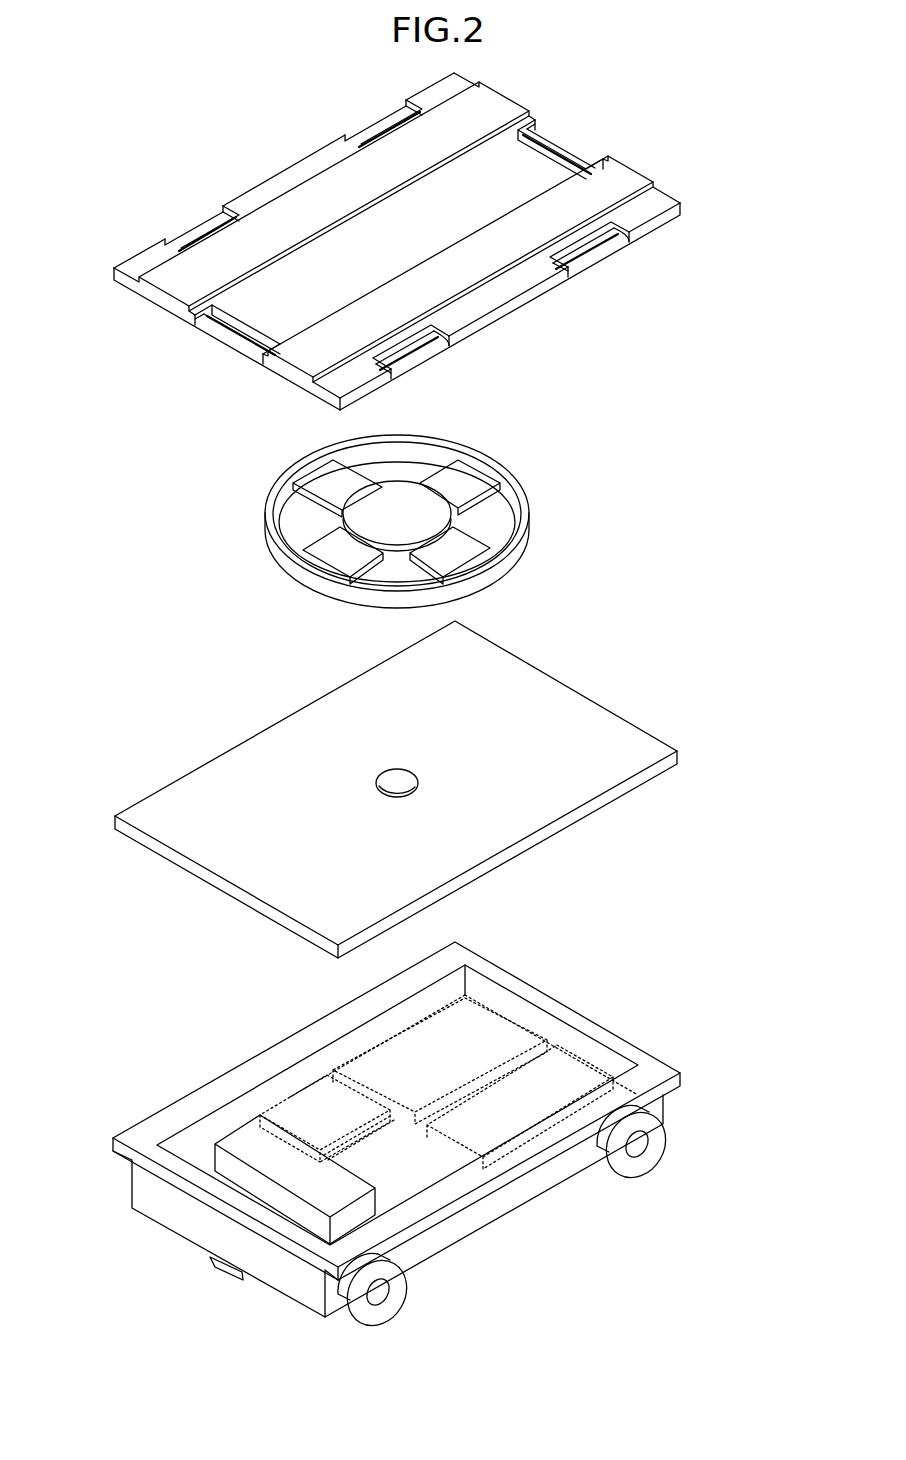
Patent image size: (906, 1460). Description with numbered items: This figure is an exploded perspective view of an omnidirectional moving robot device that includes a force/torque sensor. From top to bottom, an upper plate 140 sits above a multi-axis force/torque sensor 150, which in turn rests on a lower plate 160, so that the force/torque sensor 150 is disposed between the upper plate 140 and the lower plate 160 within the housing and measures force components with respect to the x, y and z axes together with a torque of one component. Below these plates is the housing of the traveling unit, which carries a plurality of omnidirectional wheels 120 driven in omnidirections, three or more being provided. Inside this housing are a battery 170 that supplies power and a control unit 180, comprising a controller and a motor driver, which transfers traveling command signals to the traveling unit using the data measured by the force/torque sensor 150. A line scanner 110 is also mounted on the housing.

The line scanner 110 is at (225, 1268).
The omnidirectional wheel 120 is at (397, 1310).
The upper plate 140 is at (657, 203).
The force/torque sensor 150 is at (480, 475).
The lower plate 160 is at (550, 710).
The battery 170 is at (548, 1113).
The control unit 180 is at (397, 1172).